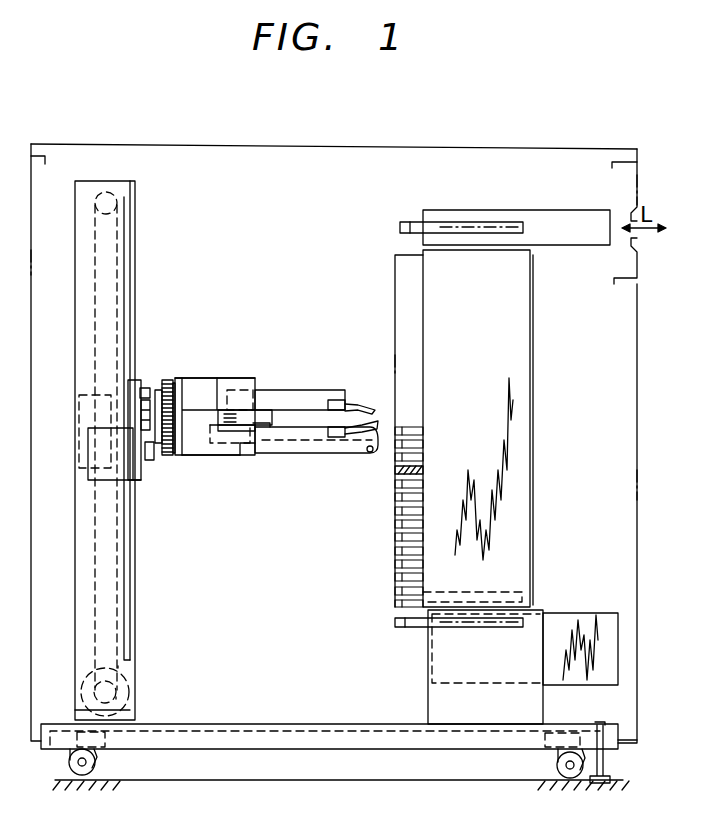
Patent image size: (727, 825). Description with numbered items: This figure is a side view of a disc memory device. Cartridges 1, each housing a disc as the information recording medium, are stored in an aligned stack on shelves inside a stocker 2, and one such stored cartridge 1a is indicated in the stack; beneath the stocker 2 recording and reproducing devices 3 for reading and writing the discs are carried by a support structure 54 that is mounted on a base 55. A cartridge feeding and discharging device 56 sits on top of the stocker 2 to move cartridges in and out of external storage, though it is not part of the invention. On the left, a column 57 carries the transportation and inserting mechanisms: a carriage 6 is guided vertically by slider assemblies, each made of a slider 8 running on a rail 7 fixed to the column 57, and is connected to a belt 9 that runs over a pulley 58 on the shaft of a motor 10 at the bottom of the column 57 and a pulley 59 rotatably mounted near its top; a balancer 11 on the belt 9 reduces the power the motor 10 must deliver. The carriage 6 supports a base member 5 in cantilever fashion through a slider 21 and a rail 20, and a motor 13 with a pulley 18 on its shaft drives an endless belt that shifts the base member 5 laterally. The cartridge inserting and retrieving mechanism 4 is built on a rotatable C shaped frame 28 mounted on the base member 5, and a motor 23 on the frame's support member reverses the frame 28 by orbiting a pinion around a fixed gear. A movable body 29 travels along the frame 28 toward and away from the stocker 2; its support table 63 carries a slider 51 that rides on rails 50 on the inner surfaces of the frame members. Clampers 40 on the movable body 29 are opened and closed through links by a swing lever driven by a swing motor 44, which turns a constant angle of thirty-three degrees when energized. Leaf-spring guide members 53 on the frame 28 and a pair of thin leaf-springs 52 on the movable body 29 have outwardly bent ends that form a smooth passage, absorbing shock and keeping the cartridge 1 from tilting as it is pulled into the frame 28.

The cartridge 1 is at (394, 590).
The cassette 1a is at (394, 469).
The stocker 2 is at (528, 365).
The recording and reproducing device 3 is at (578, 613).
The cartridge inserting and retrieving mechanism 4 is at (233, 378).
The base member 5 is at (164, 380).
The carriage 6 is at (142, 388).
The rail 7 is at (132, 640).
The slider 8 is at (129, 383).
The belt 9 is at (118, 667).
The motor 10 is at (117, 697).
The balancer 11 is at (78, 413).
The motor 13 is at (88, 479).
The pulley 18 is at (153, 458).
The rail 20 is at (140, 412).
The slider 21 is at (138, 481).
The motor 23 is at (200, 378).
The C shaped frame 28 is at (213, 455).
The movable body 29 is at (247, 431).
The clampers 40 is at (290, 398).
The swing motor 44 is at (246, 388).
The rails 50 is at (313, 443).
The slider 51 is at (236, 443).
The leaf-springs 52 is at (258, 415).
The guide member 53 is at (357, 406).
The support structure 54 is at (428, 705).
The base 55 is at (268, 724).
The cartridge feeding and discharging device 56 is at (470, 210).
The column 57 is at (112, 181).
The pulley 58 is at (82, 690).
The pulley 59 is at (96, 208).
The support table 63 is at (209, 425).